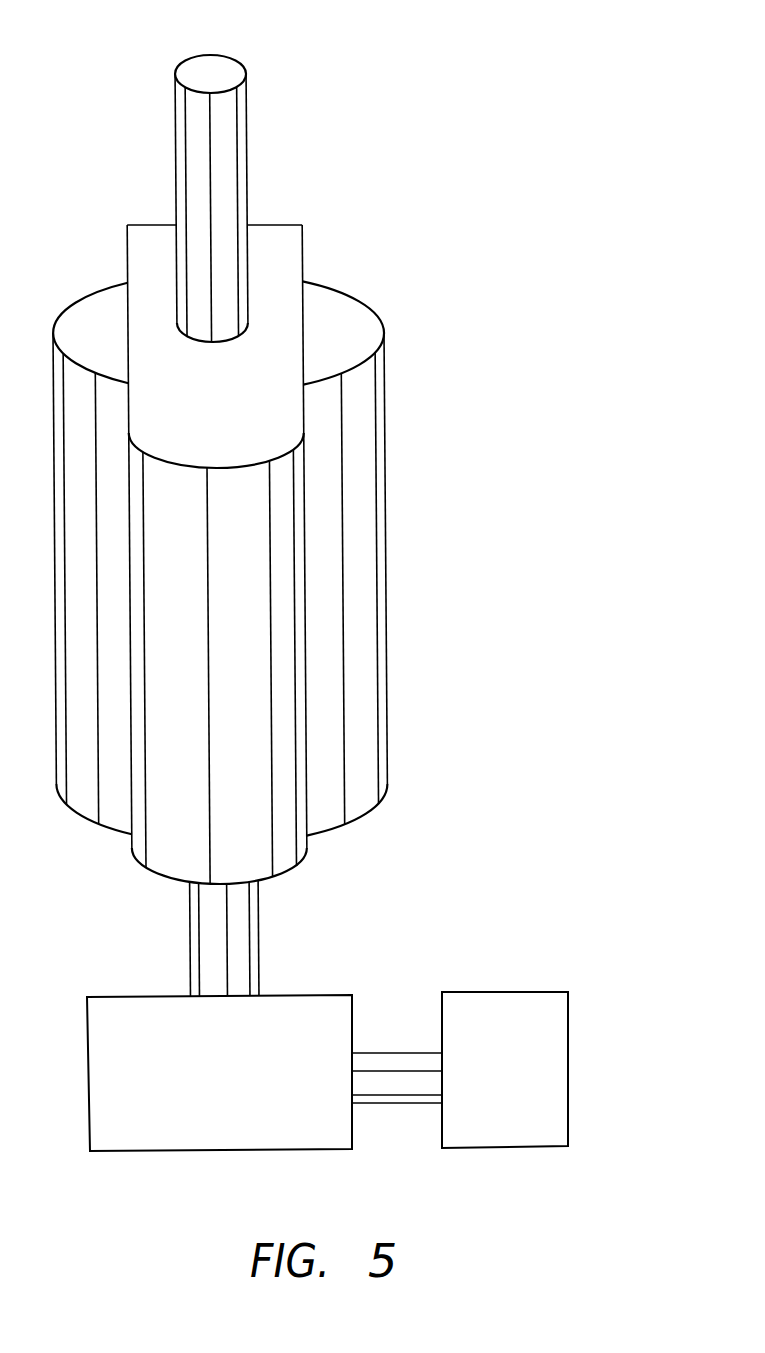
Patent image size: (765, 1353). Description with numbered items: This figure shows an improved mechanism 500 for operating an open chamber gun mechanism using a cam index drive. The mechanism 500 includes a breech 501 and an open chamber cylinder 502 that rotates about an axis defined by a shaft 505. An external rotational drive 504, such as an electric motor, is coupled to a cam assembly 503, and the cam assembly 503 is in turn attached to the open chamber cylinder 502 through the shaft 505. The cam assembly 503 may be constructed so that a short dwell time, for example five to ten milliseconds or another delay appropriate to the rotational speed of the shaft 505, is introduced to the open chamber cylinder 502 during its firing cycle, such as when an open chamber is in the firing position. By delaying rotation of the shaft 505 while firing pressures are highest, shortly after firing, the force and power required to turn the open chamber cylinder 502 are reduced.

The mechanism 500 is at (367, 90).
The breech 501 is at (302, 227).
The open chamber cylinder 502 is at (373, 311).
The cam assembly 503 is at (302, 993).
The external rotational drive 504 is at (500, 990).
The shaft 505 is at (188, 943).